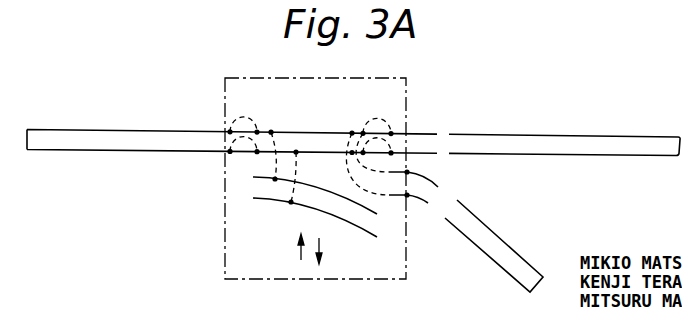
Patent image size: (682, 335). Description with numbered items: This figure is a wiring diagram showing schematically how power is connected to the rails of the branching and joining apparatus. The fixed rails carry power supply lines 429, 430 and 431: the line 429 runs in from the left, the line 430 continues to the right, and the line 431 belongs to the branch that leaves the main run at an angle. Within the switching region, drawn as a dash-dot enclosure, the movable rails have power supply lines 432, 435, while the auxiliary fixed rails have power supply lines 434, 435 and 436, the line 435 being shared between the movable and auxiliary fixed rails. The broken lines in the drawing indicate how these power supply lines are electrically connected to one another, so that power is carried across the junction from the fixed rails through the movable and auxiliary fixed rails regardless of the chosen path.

The power supply line 429 is at (97, 150).
The power supply line 430 is at (597, 133).
The power supply line 431 is at (505, 273).
The power supply line 432 is at (295, 130).
The power supply line 434 is at (210, 150).
The power supply line 435 is at (312, 184).
The power supply line 436 is at (427, 206).